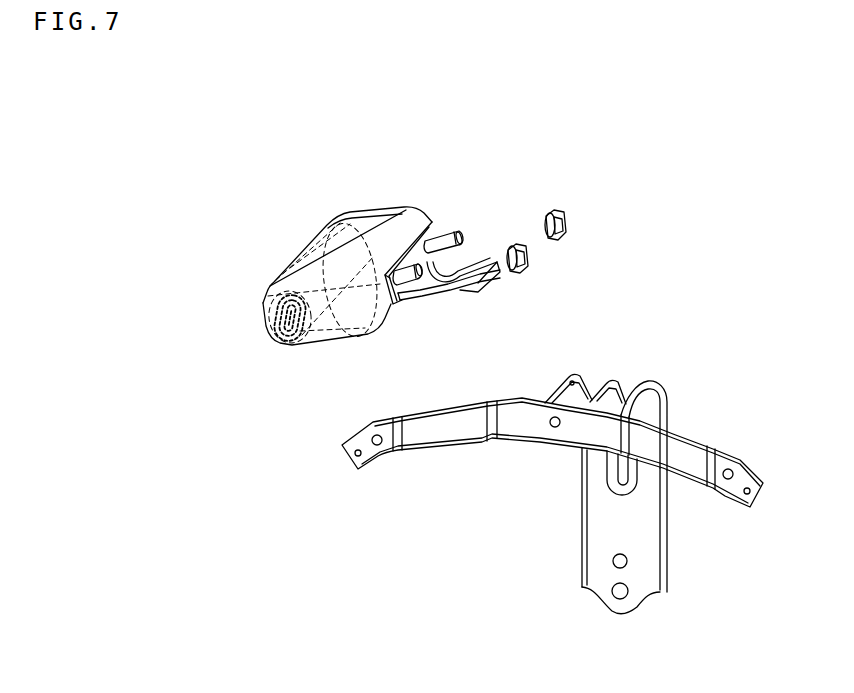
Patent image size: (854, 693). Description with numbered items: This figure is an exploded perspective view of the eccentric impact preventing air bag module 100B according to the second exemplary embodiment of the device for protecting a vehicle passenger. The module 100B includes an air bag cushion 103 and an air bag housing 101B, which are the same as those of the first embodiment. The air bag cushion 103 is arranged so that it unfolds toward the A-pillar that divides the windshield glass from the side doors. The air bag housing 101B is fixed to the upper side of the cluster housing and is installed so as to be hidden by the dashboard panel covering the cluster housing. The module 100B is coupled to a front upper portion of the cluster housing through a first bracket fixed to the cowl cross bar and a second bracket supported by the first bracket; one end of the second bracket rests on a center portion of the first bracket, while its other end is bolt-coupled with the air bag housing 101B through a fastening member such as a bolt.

The eccentric impact preventing air bag module 100B is at (272, 151).
The air bag housing 101B is at (294, 260).
The air bag cushion 103 is at (262, 316).